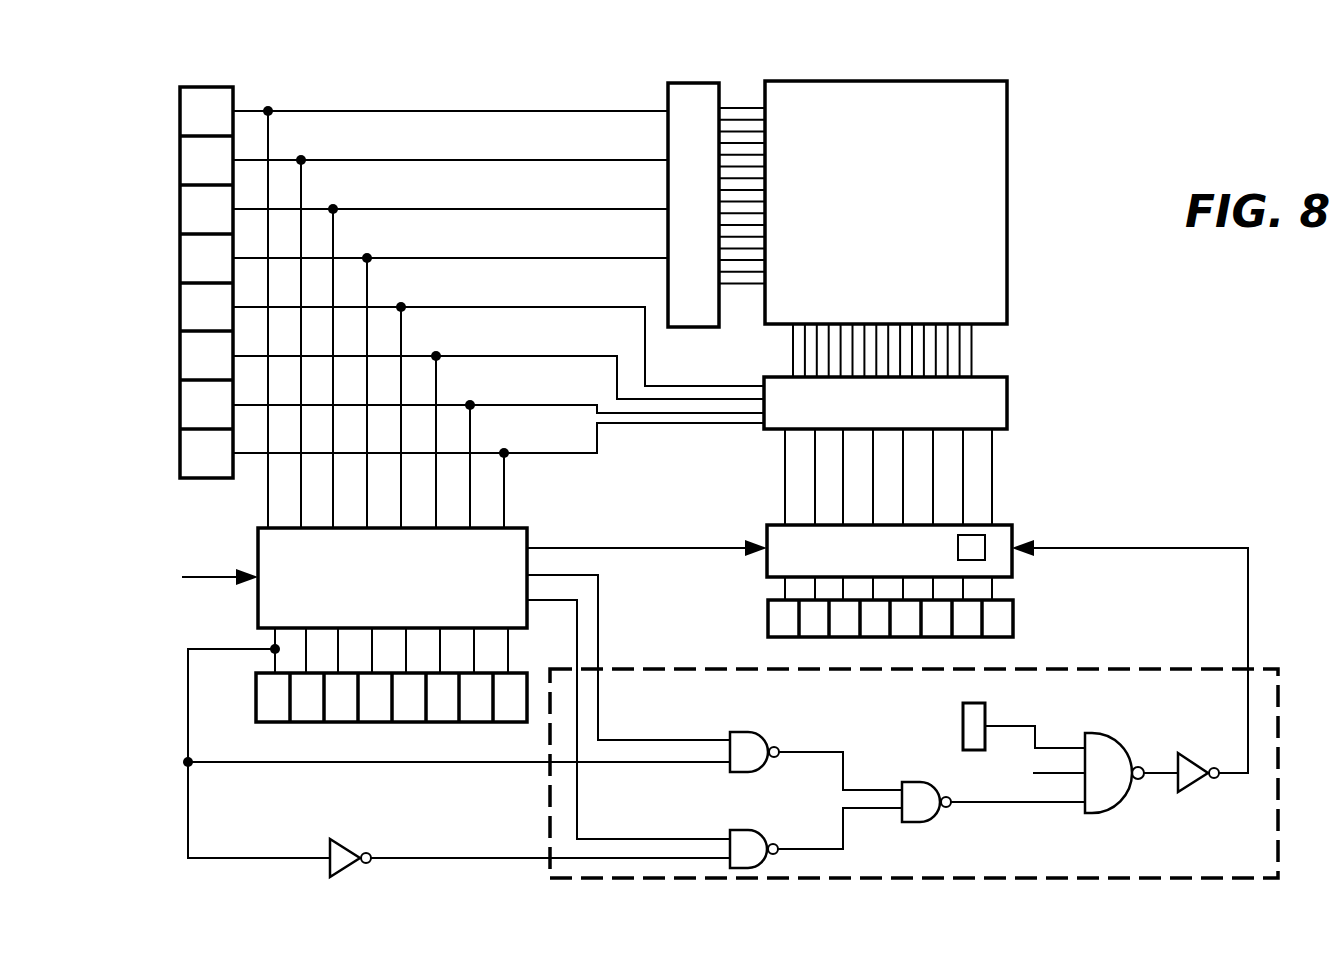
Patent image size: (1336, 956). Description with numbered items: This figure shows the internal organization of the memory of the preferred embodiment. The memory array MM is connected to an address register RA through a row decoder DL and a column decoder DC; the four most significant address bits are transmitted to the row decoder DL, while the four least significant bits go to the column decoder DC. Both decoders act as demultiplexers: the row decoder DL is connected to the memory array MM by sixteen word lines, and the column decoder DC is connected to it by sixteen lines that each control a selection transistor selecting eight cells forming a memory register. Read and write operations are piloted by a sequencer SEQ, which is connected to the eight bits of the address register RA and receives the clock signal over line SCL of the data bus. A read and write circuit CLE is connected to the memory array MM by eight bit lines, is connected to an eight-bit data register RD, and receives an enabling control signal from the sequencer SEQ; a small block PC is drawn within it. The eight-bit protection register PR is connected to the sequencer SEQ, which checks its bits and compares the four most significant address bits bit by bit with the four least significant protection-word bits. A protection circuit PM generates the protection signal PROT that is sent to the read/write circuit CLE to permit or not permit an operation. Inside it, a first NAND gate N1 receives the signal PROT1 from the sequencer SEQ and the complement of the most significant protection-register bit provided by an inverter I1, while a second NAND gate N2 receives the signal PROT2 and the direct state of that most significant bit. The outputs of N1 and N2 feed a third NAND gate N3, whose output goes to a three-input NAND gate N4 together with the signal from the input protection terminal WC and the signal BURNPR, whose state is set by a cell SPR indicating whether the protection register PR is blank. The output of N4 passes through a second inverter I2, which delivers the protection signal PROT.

The address register RA is at (178, 113).
The row decoder DL is at (665, 97).
The memory array MM is at (1008, 120).
The column decoder DC is at (1008, 404).
The protection control register PC is at (985, 545).
The read and write circuit CLE is at (767, 532).
The data register RD is at (1013, 620).
The sequencer SEQ is at (392, 578).
The clock signal line SCL is at (191, 578).
The protection register PR is at (340, 722).
The protection circuit PM is at (1090, 669).
The protection signal PROT is at (1130, 647).
The first protection signal PROT1 is at (628, 719).
The second protection signal PROT2 is at (628, 657).
The first NAND gate N1 is at (748, 772).
The second NAND gate N2 is at (752, 732).
The third NAND gate N3 is at (923, 822).
The three-input NAND gate N4 is at (1115, 737).
The cell SPR is at (963, 725).
The signal BURNPR is at (1040, 723).
The input protection terminal WC is at (1037, 773).
The inverter I1 is at (340, 870).
The second inverter I2 is at (1192, 787).